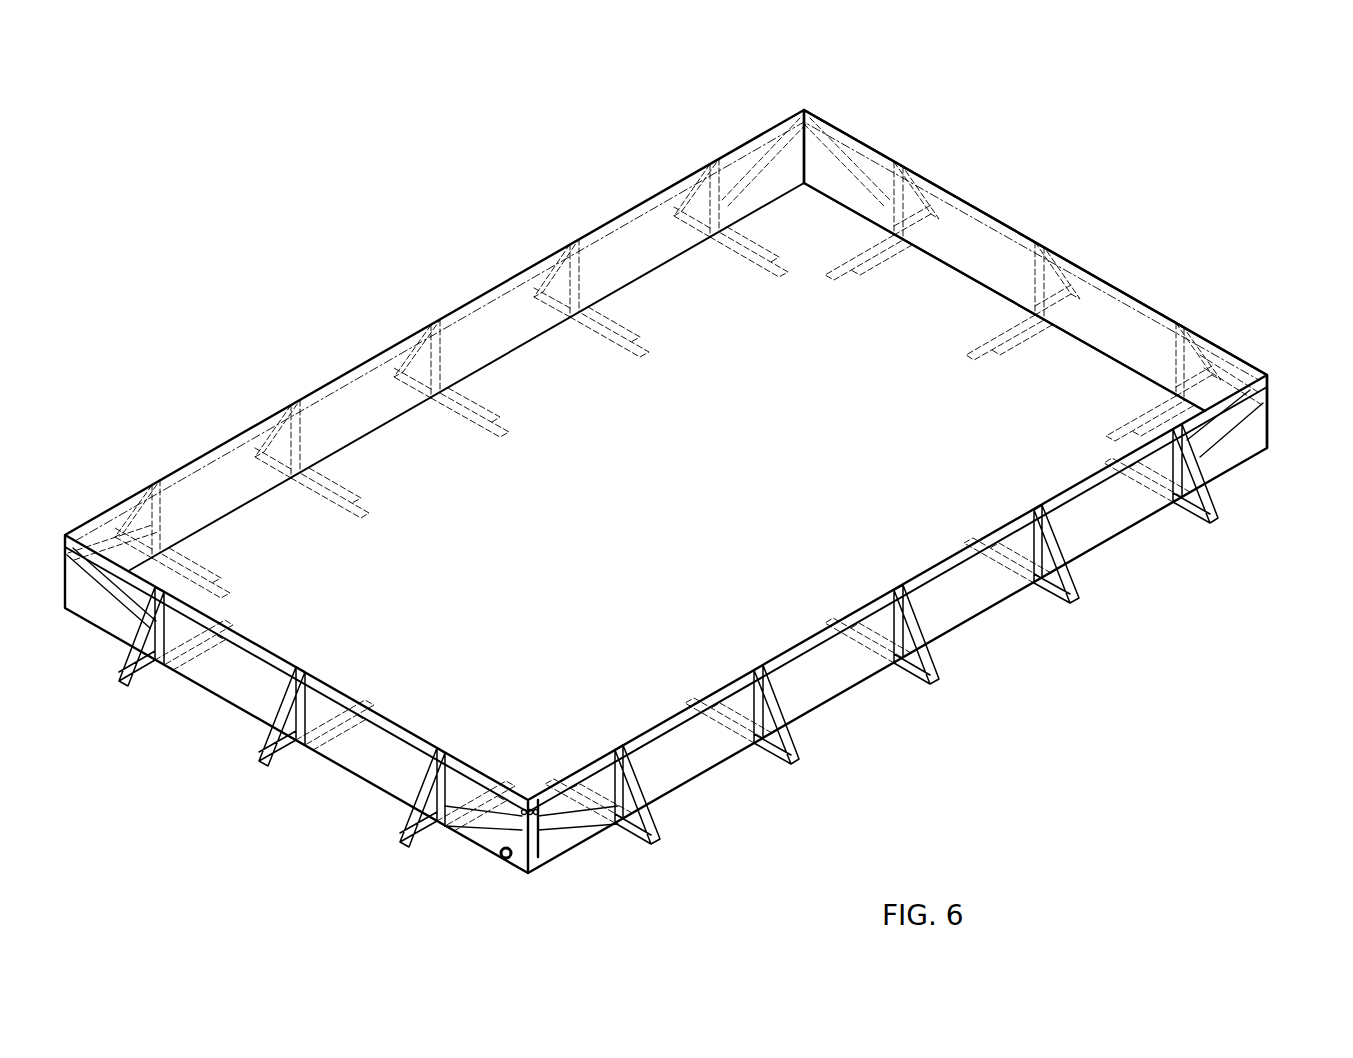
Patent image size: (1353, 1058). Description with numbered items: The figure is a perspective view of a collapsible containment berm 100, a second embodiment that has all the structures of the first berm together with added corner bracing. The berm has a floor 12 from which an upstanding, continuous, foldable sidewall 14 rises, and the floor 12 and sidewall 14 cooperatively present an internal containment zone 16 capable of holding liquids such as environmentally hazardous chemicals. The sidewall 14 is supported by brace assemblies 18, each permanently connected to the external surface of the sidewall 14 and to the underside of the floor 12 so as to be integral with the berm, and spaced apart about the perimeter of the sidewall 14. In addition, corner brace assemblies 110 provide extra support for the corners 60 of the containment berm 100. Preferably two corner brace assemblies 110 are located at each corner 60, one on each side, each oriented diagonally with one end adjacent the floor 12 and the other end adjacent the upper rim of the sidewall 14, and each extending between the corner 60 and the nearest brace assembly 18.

The containment berm 100 is at (255, 262).
The floor 12 is at (1085, 380).
The sidewall 14 is at (960, 225).
The internal containment zone 16 is at (322, 645).
The brace assembly 18 is at (1207, 490).
The corner 60 is at (805, 107).
The corner brace assembly 110 is at (845, 165).